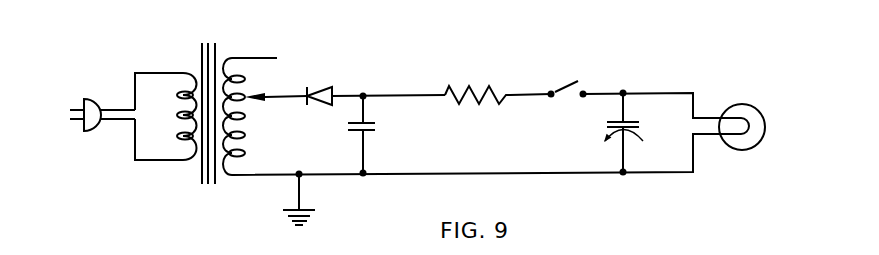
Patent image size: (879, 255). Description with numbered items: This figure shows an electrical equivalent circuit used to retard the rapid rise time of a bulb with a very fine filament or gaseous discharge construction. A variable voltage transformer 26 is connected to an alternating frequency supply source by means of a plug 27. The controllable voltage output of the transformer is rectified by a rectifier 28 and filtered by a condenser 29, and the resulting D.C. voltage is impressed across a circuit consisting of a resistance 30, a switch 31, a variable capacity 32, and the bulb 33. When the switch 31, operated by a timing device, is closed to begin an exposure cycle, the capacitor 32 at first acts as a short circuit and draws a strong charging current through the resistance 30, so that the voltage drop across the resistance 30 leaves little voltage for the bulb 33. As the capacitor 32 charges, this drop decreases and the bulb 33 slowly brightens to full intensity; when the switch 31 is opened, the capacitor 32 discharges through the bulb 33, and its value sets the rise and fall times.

The variable voltage transformer 26 is at (203, 53).
The plug 27 is at (83, 131).
The rectifier 28 is at (323, 87).
The condenser 29 is at (365, 135).
The resistance 30 is at (475, 85).
The switch 31 is at (563, 82).
The variable capacity 32 is at (606, 141).
The bulb 33 is at (738, 153).